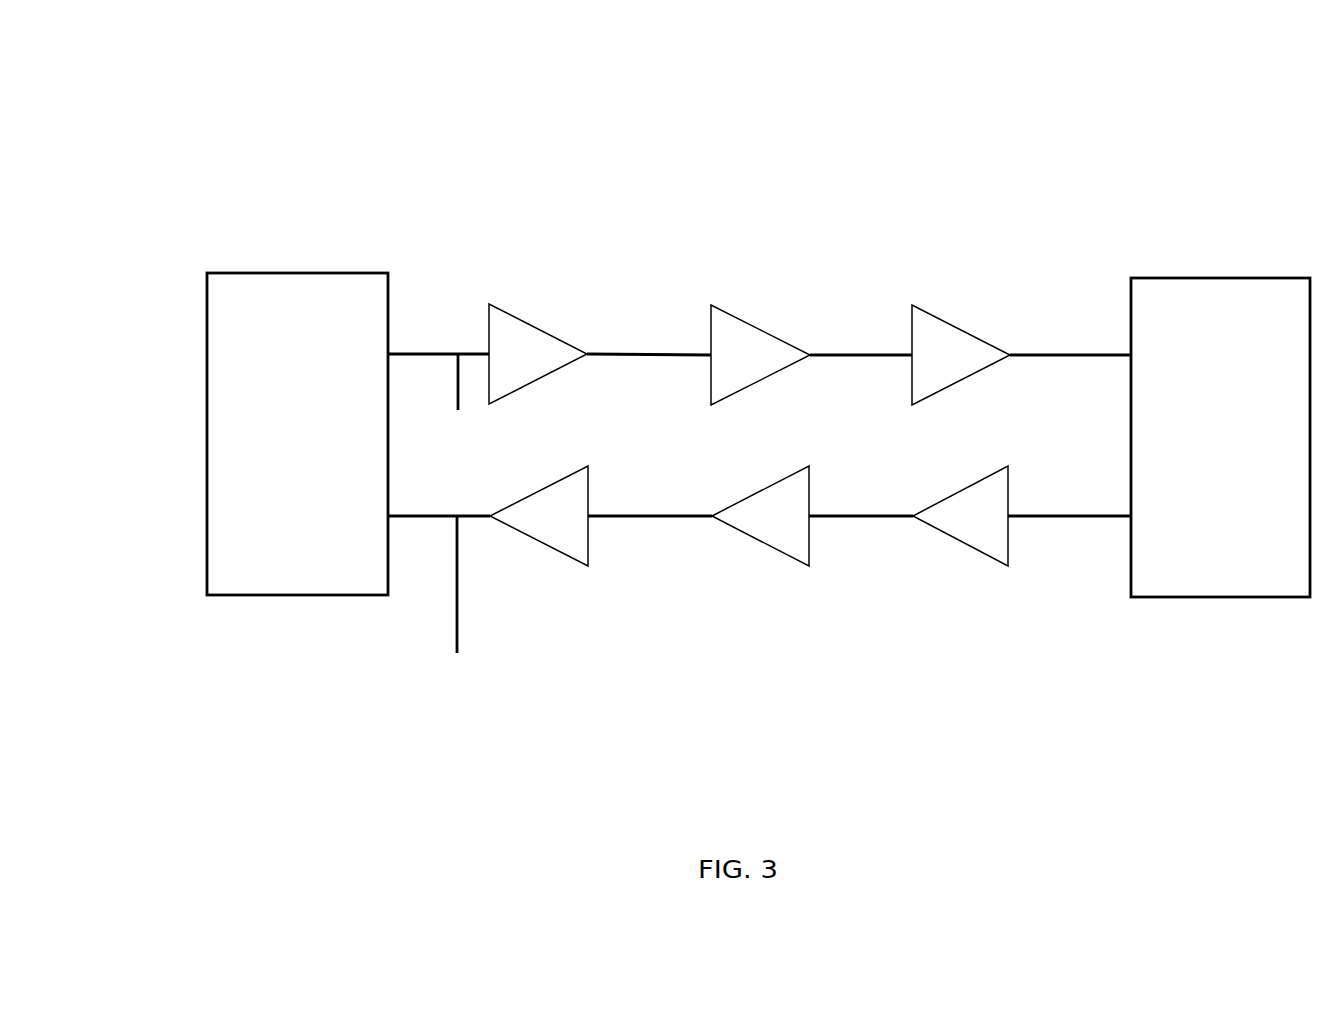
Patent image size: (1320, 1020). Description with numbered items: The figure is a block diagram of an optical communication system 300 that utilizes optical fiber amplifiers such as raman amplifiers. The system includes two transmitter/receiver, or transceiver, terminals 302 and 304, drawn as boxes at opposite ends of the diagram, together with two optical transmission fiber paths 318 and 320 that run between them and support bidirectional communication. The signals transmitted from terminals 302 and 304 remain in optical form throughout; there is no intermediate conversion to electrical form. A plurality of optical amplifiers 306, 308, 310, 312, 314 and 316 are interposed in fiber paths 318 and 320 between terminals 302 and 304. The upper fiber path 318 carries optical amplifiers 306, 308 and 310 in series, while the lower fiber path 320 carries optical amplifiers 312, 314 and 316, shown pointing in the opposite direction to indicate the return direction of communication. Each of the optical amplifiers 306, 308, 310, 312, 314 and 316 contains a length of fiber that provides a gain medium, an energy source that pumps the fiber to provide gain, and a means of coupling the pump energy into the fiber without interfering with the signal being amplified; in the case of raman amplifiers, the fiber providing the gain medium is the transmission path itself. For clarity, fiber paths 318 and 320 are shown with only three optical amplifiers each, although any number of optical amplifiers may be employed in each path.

The optical communication system 300 is at (186, 55).
The transceiver terminal 302 is at (317, 273).
The transceiver terminal 304 is at (1243, 278).
The optical amplifier 306 is at (550, 332).
The optical amplifier 308 is at (768, 335).
The optical amplifier 310 is at (968, 335).
The optical amplifier 312 is at (960, 538).
The optical amplifier 314 is at (757, 538).
The optical amplifier 316 is at (535, 538).
The optical transmission fiber path 318 is at (442, 397).
The optical transmission fiber path 320 is at (440, 597).